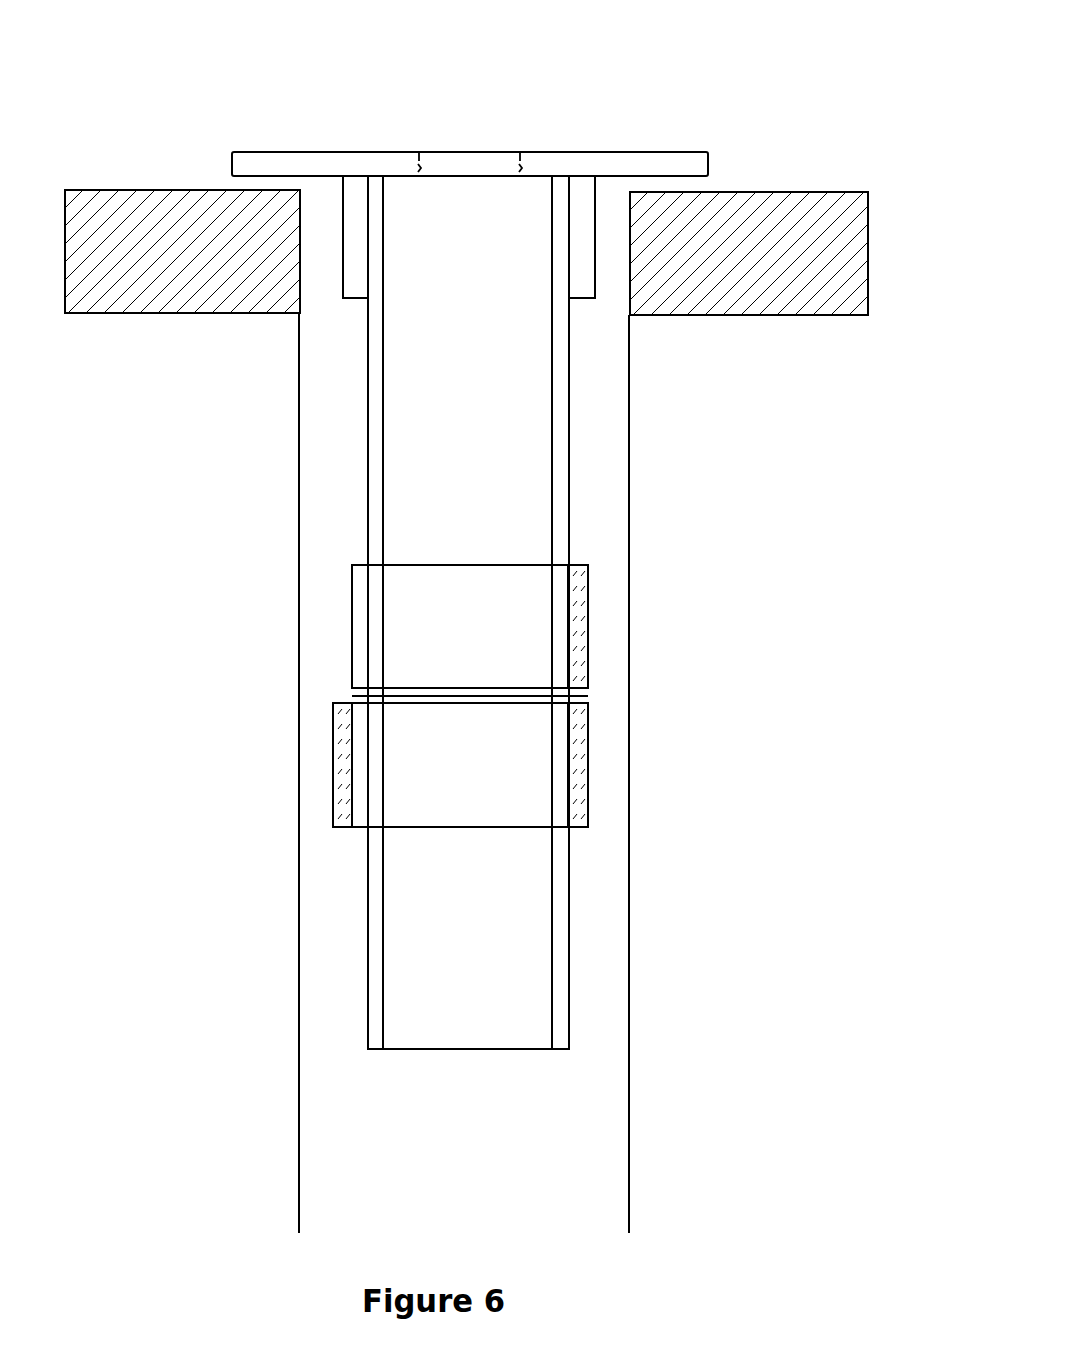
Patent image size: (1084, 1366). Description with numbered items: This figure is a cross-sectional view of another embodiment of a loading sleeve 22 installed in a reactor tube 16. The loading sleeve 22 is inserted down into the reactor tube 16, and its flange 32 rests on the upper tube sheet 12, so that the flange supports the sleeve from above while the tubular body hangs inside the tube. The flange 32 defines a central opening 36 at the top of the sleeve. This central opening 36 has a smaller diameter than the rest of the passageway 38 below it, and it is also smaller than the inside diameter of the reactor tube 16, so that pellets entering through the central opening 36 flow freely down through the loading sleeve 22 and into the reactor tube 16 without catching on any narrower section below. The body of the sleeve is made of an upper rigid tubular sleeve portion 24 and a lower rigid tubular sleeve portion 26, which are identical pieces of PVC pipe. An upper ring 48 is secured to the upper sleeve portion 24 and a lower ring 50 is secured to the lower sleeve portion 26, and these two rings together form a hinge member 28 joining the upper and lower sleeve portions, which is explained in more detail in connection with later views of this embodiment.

The upper tube sheet 12 is at (145, 314).
The reactor tube 16 is at (623, 992).
The loading sleeve 22 is at (628, 94).
The upper rigid tubular sleeve portion 24 is at (572, 494).
The lower rigid tubular sleeve portion 26 is at (570, 908).
The hinge member 28 is at (590, 645).
The flange 32 is at (627, 152).
The central opening 36 is at (494, 152).
The passageway 38 is at (385, 443).
The upper ring 48 is at (350, 603).
The lower ring 50 is at (333, 793).